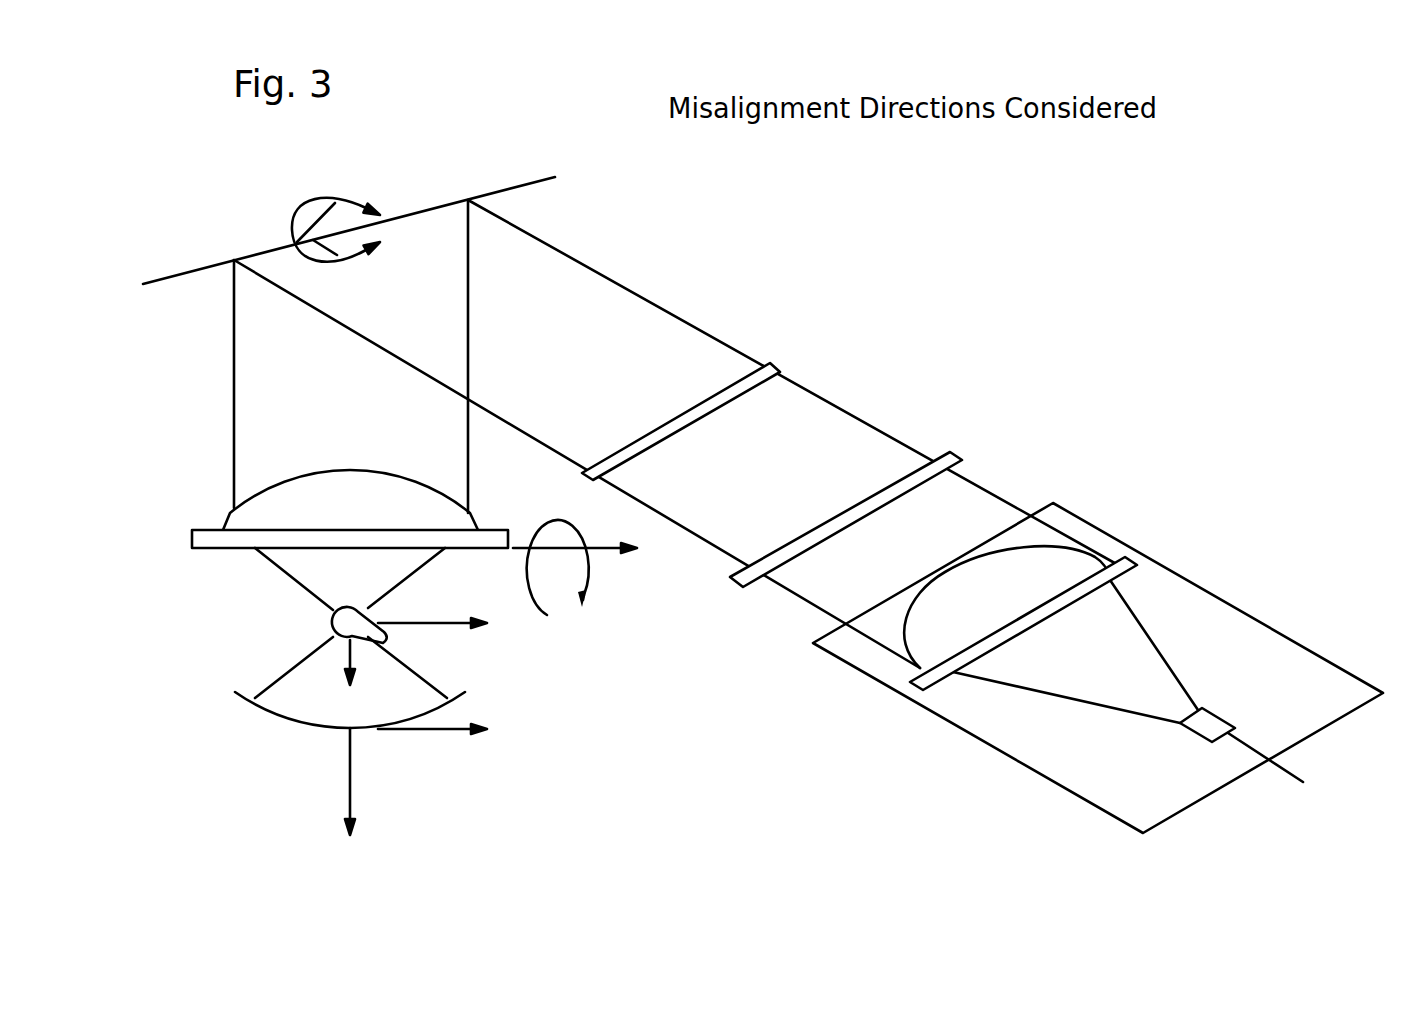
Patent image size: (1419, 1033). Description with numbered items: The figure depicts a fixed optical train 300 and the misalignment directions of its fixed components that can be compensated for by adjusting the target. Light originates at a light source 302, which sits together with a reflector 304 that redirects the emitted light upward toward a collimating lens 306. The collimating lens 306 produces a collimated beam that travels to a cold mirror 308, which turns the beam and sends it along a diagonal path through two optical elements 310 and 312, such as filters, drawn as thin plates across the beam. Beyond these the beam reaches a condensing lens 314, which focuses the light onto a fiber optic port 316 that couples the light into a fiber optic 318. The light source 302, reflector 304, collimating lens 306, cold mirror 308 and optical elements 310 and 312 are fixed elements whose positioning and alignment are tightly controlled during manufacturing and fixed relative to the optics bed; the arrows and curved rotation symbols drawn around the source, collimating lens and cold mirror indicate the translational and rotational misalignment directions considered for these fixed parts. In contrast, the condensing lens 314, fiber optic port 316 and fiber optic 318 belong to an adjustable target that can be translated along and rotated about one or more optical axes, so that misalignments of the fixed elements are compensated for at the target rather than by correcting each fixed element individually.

The fixed optical train 300 is at (962, 252).
The light source 302 is at (440, 627).
The reflector 304 is at (363, 731).
The collimating lens 306 is at (227, 549).
The cold mirror 308 is at (538, 183).
The optical element 310 is at (776, 367).
The optical element 312 is at (958, 454).
The condensing lens 314 is at (912, 686).
The fiber optic port 316 is at (1195, 736).
The fiber optic 318 is at (1286, 776).